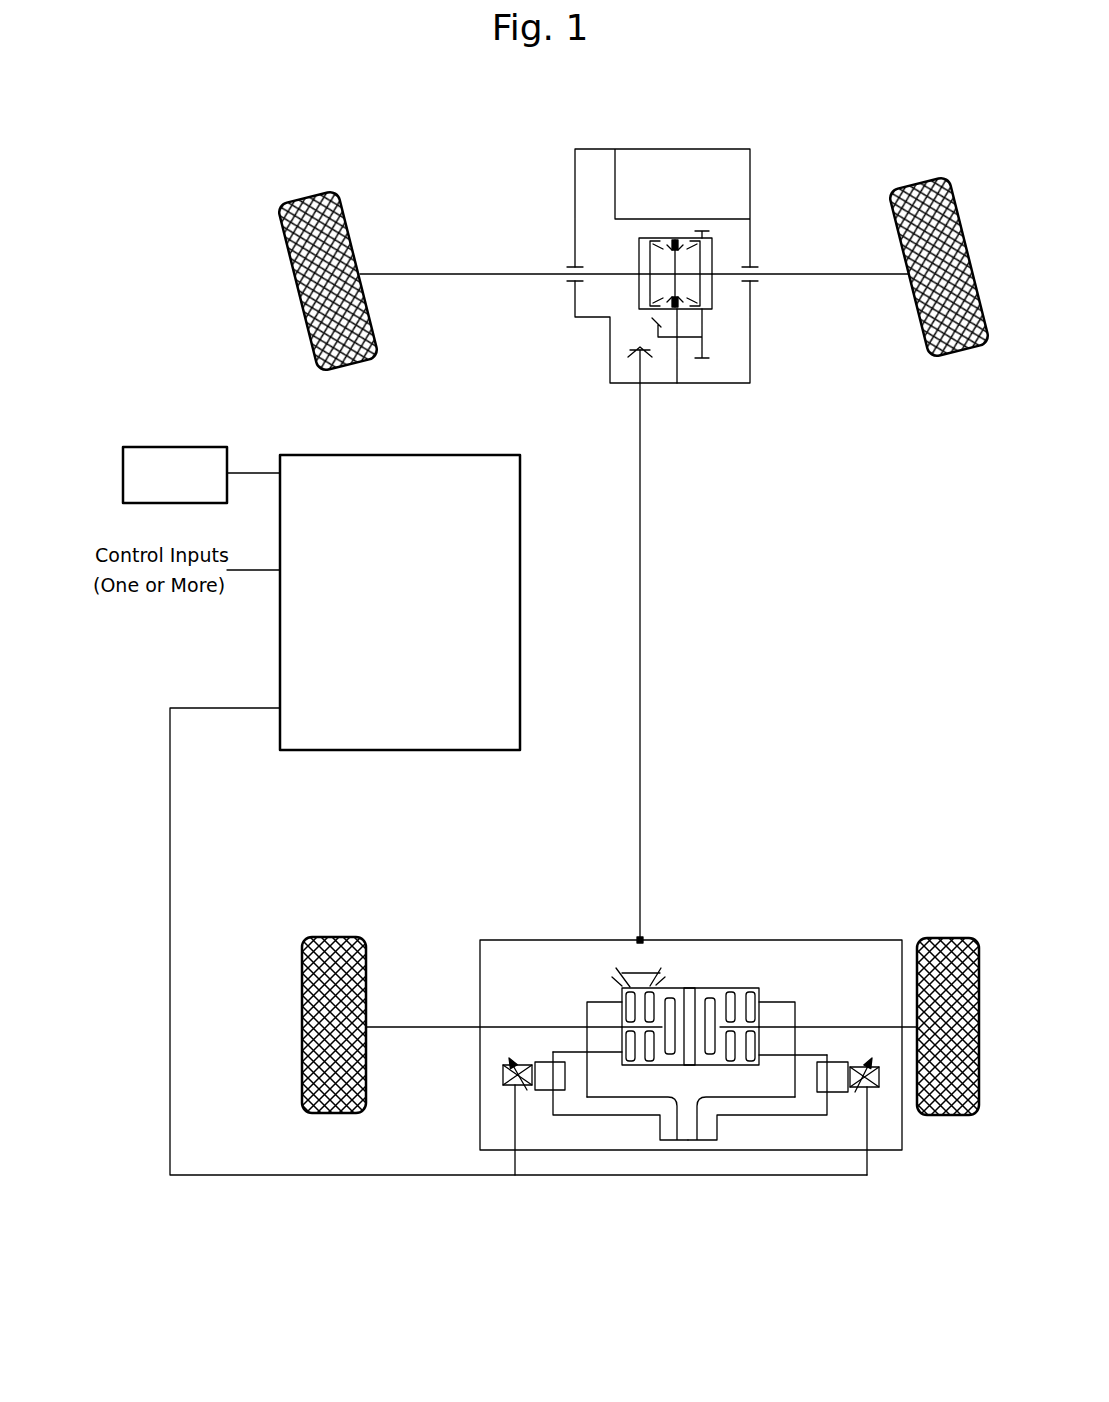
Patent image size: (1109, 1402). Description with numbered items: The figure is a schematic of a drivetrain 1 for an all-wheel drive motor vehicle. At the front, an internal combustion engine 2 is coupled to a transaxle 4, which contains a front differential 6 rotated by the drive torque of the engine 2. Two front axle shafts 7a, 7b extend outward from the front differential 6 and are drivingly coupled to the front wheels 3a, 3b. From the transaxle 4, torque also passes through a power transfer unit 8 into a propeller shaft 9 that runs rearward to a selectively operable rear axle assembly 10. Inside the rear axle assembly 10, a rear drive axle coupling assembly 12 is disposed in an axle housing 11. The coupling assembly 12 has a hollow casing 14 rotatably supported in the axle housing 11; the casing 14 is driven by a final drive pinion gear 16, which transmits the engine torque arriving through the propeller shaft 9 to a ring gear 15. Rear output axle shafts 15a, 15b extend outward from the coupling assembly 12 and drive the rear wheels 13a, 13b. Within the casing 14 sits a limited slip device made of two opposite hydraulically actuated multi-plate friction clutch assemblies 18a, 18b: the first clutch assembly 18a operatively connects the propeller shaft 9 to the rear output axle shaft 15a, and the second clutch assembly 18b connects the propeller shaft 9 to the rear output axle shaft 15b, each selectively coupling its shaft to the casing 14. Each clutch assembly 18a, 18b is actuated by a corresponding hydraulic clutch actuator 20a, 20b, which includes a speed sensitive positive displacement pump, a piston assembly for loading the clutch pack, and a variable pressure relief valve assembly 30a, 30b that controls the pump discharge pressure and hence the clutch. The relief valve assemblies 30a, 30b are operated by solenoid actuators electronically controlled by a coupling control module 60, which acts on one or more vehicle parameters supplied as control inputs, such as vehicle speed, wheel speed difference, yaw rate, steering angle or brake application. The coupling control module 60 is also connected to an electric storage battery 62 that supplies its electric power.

The drivetrain 1 is at (797, 603).
The internal combustion engine 2 is at (690, 160).
The front wheel 3a is at (313, 202).
The front wheel 3b is at (921, 188).
The transaxle 4 is at (598, 237).
The front differential 6 is at (714, 251).
The front axle shaft 7a is at (430, 272).
The front axle shaft 7b is at (820, 277).
The power transfer unit 8 is at (726, 356).
The propeller shaft 9 is at (641, 711).
The rear axle assembly 10 is at (771, 908).
The axle housing 11 is at (666, 940).
The rear drive axle coupling assembly 12 is at (773, 990).
The rear wheel 13a is at (303, 965).
The rear wheel 13b is at (917, 945).
The hollow casing 14 is at (713, 988).
The ring gear 15 is at (622, 1066).
The rear output axle shaft 15a is at (416, 1023).
The rear output axle shaft 15b is at (870, 1023).
The final drive pinion gear 16 is at (624, 971).
The first hydraulically actuated friction clutch assembly 18a is at (658, 1070).
The second hydraulically actuated friction clutch assembly 18b is at (720, 1070).
The hydraulic clutch actuator 20a is at (615, 992).
The hydraulic clutch actuator 20b is at (775, 1060).
The variable pressure relief valve assembly 30a is at (533, 1051).
The variable pressure relief valve assembly 30b is at (843, 1095).
The coupling control module 60 is at (395, 455).
The electric storage battery 62 is at (165, 447).